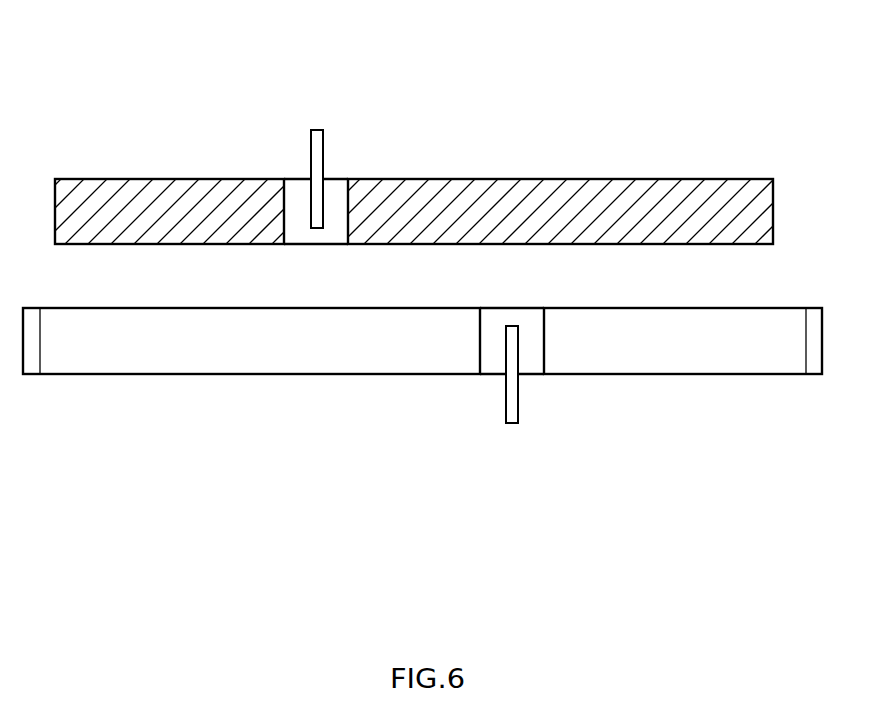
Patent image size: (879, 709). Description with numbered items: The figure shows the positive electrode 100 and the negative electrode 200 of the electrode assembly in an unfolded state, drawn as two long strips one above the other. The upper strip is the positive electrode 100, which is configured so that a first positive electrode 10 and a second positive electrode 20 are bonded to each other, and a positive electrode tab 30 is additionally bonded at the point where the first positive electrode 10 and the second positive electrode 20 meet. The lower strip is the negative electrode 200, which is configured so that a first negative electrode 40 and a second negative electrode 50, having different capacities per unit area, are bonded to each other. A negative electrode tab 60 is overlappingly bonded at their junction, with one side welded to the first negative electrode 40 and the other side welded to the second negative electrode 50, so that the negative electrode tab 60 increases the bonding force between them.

The first positive electrode 10 is at (168, 142).
The second positive electrode 20 is at (618, 141).
The positive electrode tab 30 is at (310, 146).
The first negative electrode 40 is at (265, 410).
The second negative electrode 50 is at (640, 410).
The negative electrode tab 60 is at (520, 407).
The positive electrode 100 is at (412, 141).
The negative electrode 200 is at (422, 418).